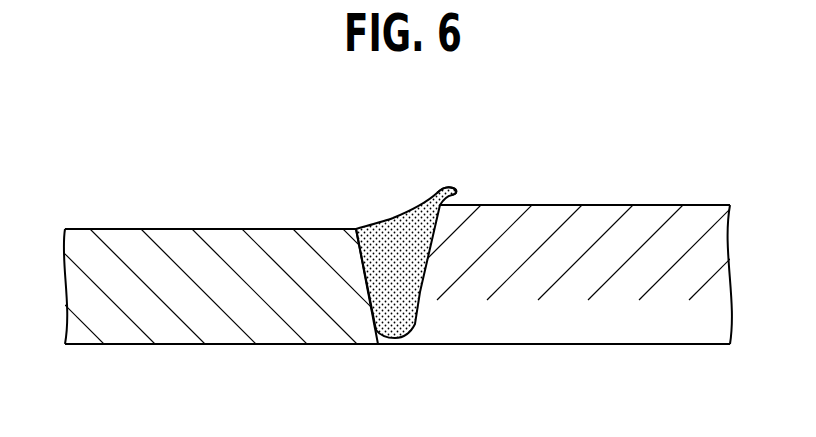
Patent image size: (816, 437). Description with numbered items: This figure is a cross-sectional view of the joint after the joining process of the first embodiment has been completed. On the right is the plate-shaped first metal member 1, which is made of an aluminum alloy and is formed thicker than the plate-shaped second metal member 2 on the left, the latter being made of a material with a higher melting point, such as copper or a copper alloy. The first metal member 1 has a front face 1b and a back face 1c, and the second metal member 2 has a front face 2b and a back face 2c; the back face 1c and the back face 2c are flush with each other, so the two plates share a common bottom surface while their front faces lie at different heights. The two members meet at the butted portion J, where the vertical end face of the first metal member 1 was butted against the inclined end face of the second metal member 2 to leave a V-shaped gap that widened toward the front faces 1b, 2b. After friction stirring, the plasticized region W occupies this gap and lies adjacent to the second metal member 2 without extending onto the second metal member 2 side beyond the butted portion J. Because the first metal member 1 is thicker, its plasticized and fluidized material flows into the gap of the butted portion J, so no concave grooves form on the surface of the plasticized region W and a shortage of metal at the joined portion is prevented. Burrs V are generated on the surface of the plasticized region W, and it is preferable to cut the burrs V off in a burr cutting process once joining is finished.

The first metal member 1 is at (675, 161).
The front face 1b is at (603, 204).
The back face 1c is at (572, 346).
The second metal member 2 is at (102, 189).
The front face 2b is at (173, 228).
The back face 2c is at (176, 346).
The plasticized region W is at (396, 231).
The burrs V is at (448, 185).
The butted portion J is at (378, 346).